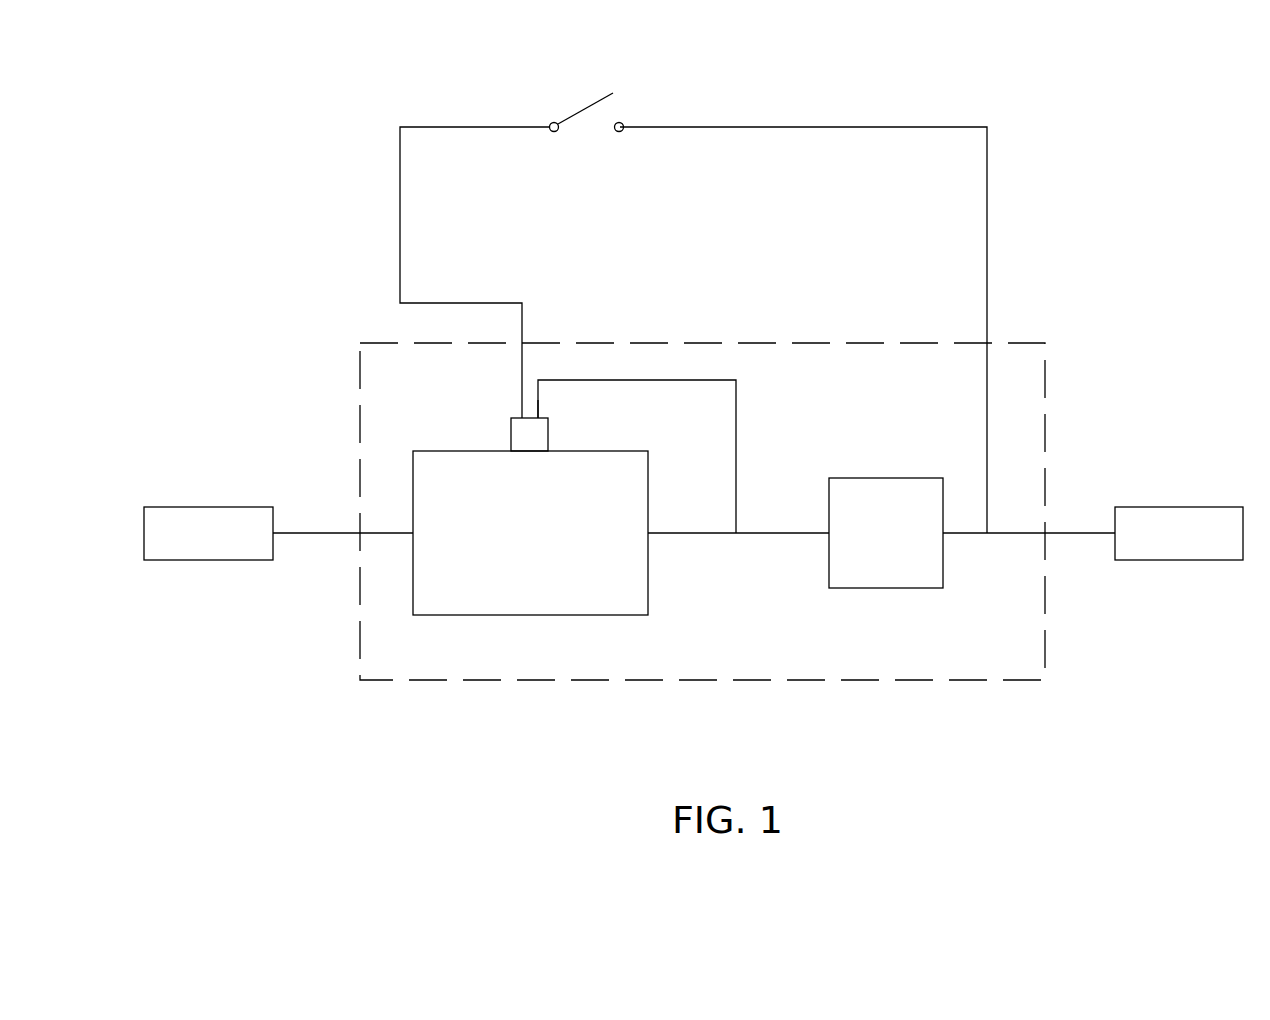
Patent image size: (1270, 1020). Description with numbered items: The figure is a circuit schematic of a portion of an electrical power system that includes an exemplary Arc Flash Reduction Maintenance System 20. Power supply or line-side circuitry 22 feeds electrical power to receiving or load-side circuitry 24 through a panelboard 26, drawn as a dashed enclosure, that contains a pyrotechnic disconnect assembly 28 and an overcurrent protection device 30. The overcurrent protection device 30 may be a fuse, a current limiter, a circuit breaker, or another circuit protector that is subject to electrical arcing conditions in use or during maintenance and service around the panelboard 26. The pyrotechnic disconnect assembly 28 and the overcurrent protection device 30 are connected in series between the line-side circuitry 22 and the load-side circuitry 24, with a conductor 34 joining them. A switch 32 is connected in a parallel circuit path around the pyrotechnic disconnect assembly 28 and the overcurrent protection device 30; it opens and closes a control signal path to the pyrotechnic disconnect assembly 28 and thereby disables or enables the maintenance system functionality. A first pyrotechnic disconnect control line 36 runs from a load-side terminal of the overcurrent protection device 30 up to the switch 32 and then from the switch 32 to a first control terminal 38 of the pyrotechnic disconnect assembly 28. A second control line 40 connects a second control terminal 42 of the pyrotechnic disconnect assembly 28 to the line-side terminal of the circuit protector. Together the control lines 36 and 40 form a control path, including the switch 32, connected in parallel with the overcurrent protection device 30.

The Arc Flash Reduction Maintenance System 20 is at (1060, 98).
The line-side circuitry 22 is at (222, 484).
The load-side circuitry 24 is at (1194, 484).
The panelboard 26 is at (1046, 351).
The pyrotechnic disconnect assembly 28 is at (545, 546).
The overcurrent protection device 30 is at (900, 546).
The switch 32 is at (572, 84).
The conductor 34 is at (800, 540).
The first pyrotechnic disconnect control line 36 is at (988, 228).
The first control terminal 38 is at (521, 417).
The second control line 40 is at (737, 438).
The second control terminal 42 is at (539, 417).